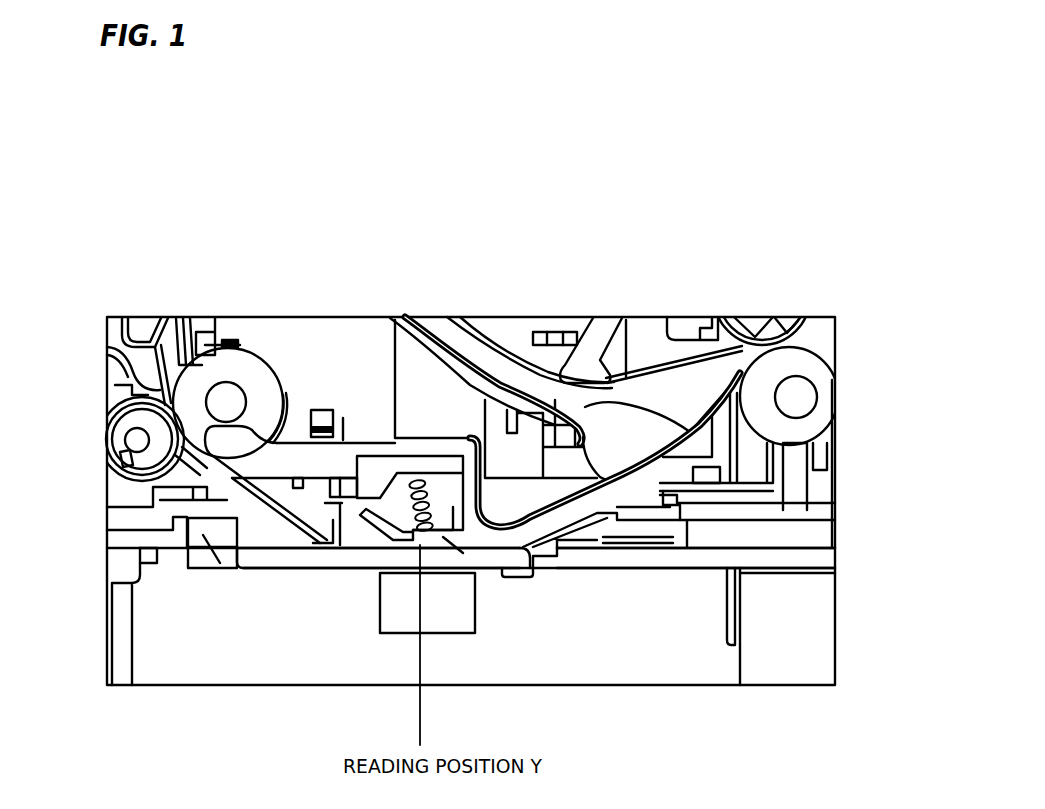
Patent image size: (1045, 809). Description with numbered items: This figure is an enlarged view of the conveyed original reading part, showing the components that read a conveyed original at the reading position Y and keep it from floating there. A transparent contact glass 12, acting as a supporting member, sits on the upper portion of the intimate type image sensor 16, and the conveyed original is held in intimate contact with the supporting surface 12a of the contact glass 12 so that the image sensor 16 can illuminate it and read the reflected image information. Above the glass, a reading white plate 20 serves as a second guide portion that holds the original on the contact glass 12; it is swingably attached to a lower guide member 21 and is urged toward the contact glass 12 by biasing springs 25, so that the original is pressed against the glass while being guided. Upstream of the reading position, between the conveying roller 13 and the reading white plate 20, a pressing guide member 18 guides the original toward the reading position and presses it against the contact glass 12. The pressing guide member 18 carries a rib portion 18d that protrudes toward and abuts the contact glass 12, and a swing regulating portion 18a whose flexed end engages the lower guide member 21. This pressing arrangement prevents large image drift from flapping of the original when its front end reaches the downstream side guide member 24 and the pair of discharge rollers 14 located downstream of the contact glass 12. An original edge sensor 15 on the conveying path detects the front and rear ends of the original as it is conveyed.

The contact glass 12 is at (347, 560).
The supporting surface 12a is at (362, 553).
The conveying roller 13 is at (230, 365).
The pair of discharge rollers 14 is at (813, 363).
The original edge sensor 15 is at (180, 468).
The intimate type image sensor 16 is at (425, 622).
The pressing guide member 18 is at (320, 517).
The swing regulating portion 18a is at (278, 460).
The rib portion 18d is at (330, 548).
The reading white plate 20 is at (443, 537).
The lower guide member 21 is at (322, 410).
The downstream side guide member 24 is at (542, 545).
The biasing springs 25 is at (425, 482).